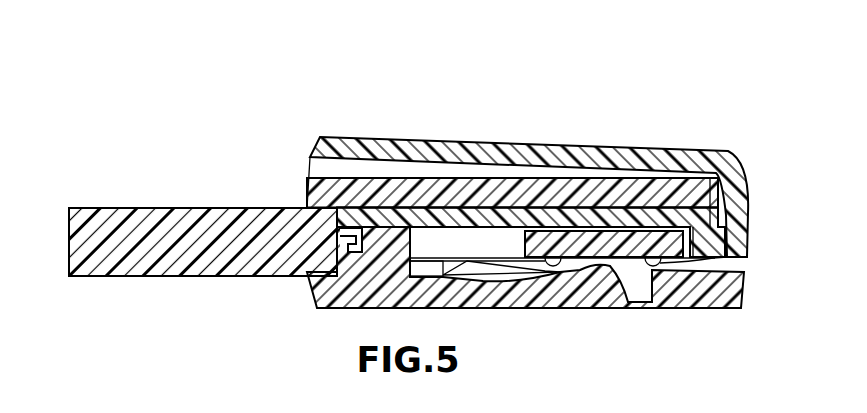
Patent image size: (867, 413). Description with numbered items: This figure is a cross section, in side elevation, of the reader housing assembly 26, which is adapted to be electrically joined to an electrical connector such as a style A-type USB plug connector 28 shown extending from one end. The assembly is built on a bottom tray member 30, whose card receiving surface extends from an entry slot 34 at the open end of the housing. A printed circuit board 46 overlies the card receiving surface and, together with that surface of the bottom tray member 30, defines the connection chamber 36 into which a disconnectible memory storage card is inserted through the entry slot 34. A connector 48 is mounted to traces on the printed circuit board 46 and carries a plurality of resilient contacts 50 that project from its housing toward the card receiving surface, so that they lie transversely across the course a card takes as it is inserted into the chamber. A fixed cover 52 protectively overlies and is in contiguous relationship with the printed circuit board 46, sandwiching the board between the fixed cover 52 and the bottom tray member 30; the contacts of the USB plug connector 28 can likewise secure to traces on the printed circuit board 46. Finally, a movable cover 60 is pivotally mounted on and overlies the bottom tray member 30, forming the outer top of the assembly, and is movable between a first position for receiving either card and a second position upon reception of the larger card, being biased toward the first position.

The reader housing assembly 26 is at (670, 120).
The USB plug connector 28 is at (143, 232).
The bottom tray member 30 is at (560, 312).
The entry slot 34 is at (740, 262).
The connection chamber 36 is at (640, 263).
The printed circuit board 46 is at (530, 214).
The connector 48 is at (613, 253).
The resilient contacts 50 is at (655, 266).
The fixed cover 52 is at (360, 176).
The movable cover 60 is at (484, 152).